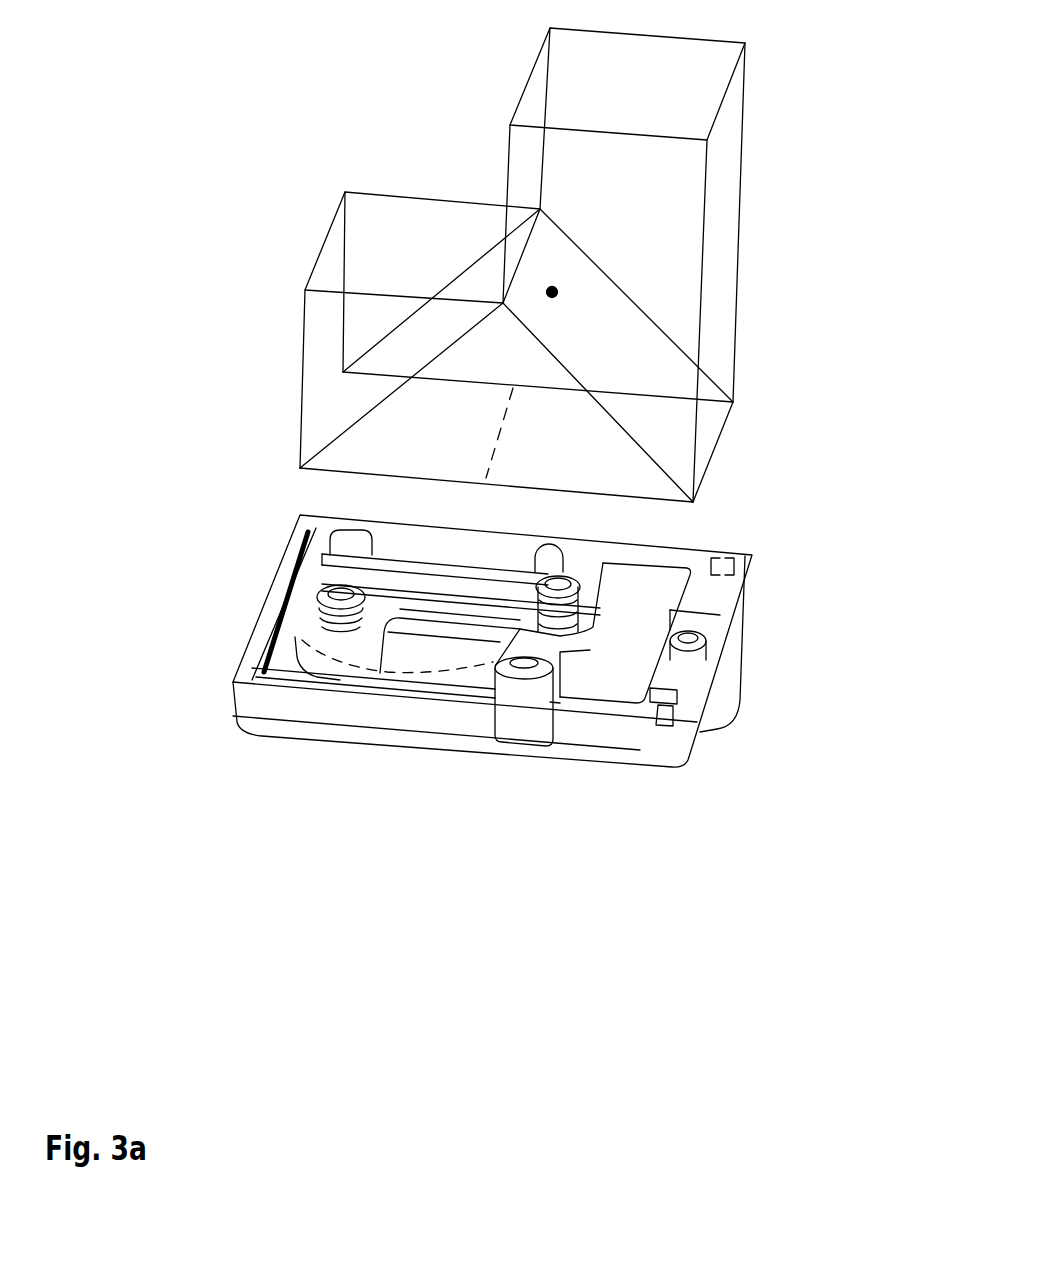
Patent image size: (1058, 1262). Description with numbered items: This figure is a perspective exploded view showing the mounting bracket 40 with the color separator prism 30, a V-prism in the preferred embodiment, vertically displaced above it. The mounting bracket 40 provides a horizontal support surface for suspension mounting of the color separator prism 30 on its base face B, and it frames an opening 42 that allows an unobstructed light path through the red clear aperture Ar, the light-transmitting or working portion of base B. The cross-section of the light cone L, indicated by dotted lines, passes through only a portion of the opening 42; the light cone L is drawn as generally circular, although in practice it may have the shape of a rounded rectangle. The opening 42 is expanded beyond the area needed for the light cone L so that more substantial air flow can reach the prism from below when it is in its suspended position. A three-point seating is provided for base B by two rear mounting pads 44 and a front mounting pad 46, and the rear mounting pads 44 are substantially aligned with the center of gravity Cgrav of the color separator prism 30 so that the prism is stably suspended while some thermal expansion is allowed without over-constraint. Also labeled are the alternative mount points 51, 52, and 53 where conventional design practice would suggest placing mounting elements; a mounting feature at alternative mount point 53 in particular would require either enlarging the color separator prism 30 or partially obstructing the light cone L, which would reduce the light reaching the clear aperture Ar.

The color separator prism 30 is at (742, 237).
The red clear aperture Ar is at (305, 381).
The base face B is at (722, 442).
The center of gravity Cgrav is at (555, 289).
The mounting bracket 40 is at (687, 755).
The opening 42 is at (277, 637).
The rear mounting pads 44 is at (568, 580).
The front mounting pad 46 is at (702, 650).
The alternative mount point 51 is at (718, 558).
The alternative mount point 52 is at (687, 697).
The alternative mount point 53 is at (280, 570).
The light cone L is at (303, 517).